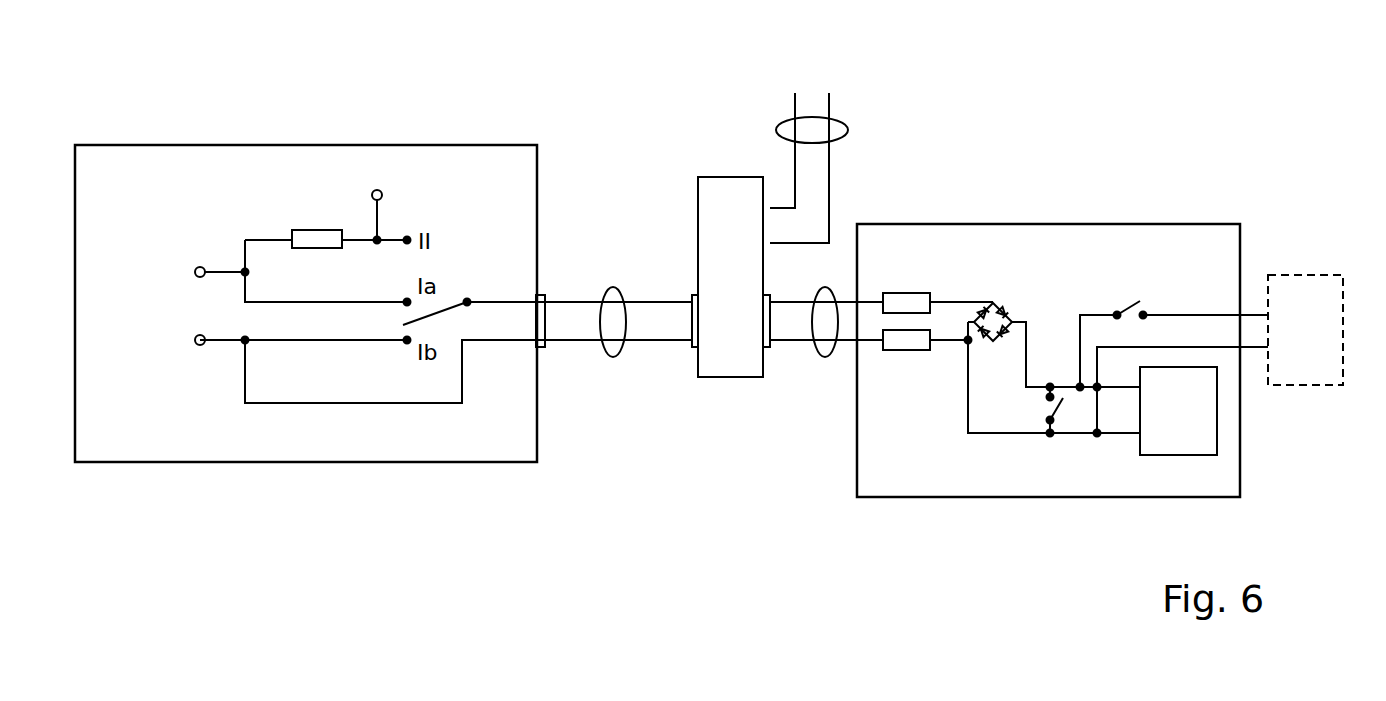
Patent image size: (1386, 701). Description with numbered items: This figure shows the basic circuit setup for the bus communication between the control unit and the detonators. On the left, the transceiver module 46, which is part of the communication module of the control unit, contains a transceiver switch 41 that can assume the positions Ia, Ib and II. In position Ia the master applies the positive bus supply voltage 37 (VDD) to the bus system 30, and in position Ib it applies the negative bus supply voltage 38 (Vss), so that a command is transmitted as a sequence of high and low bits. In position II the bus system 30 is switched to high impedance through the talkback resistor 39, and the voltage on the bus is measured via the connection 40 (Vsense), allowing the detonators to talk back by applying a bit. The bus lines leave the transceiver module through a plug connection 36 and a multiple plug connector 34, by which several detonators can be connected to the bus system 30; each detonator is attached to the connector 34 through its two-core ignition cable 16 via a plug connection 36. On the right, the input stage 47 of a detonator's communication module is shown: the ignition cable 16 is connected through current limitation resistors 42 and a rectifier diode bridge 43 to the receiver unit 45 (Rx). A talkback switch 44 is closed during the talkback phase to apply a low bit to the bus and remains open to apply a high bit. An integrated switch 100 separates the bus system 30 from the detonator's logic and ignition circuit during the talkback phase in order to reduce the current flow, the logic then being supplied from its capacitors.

The transceiver module 46 is at (495, 145).
The input stage 47 is at (1152, 224).
The talkback resistor 39 is at (307, 238).
The connection (Vsense) 40 is at (381, 198).
The positive bus supply voltage (VDD) 37 is at (168, 267).
The negative bus supply voltage (Vss) 38 is at (168, 337).
The transceiver switch 41 is at (435, 305).
The plug connection 36 is at (550, 278).
The bus system 30 is at (618, 278).
The multiple plug connector 34 is at (730, 277).
The ignition cable 16 is at (817, 353).
The current limitation resistors 42 is at (917, 330).
The rectifier diode bridge 43 is at (1002, 305).
The talkback switch 44 is at (1047, 398).
The receiver unit (Rx) 45 is at (1178, 411).
The integrated switch 100 is at (1125, 312).